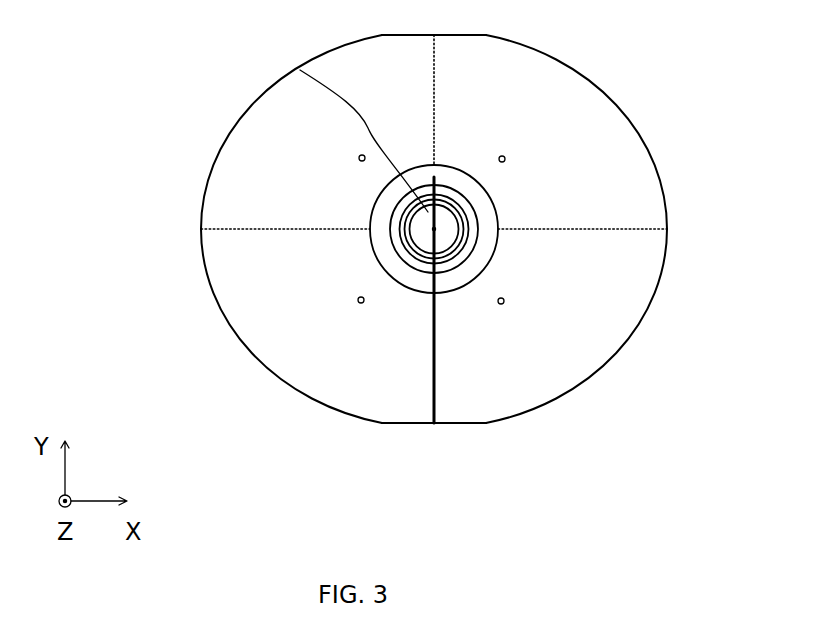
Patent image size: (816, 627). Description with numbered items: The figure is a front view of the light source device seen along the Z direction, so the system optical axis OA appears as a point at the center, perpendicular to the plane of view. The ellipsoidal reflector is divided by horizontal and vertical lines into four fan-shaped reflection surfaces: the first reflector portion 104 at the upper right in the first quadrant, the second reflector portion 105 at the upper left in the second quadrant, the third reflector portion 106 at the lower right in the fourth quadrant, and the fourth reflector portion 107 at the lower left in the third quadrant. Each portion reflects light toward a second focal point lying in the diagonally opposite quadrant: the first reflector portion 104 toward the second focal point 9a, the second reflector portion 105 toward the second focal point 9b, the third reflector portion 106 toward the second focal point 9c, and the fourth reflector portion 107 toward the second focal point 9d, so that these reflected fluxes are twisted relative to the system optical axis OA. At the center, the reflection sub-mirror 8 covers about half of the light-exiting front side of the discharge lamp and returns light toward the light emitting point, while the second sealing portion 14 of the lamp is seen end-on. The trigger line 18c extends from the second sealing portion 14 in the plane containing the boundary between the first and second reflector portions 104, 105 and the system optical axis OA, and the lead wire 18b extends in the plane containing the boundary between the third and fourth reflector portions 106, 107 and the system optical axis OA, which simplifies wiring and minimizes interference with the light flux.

The reflection sub-mirror 8 is at (456, 170).
The second sealing portion 14 is at (462, 217).
The lead wire 18b is at (433, 382).
The trigger line 18c is at (300, 70).
The system optical axis OA is at (434, 229).
The second focal point of first reflector portion 9a is at (504, 301).
The second focal point of second reflector portion 9b is at (358, 300).
The second focal point of third reflector portion 9c is at (505, 159).
The second focal point of fourth reflector portion 9d is at (359, 158).
The first reflector portion 104 is at (523, 57).
The second reflector portion 105 is at (343, 57).
The third reflector portion 106 is at (520, 403).
The fourth reflector portion 107 is at (345, 402).